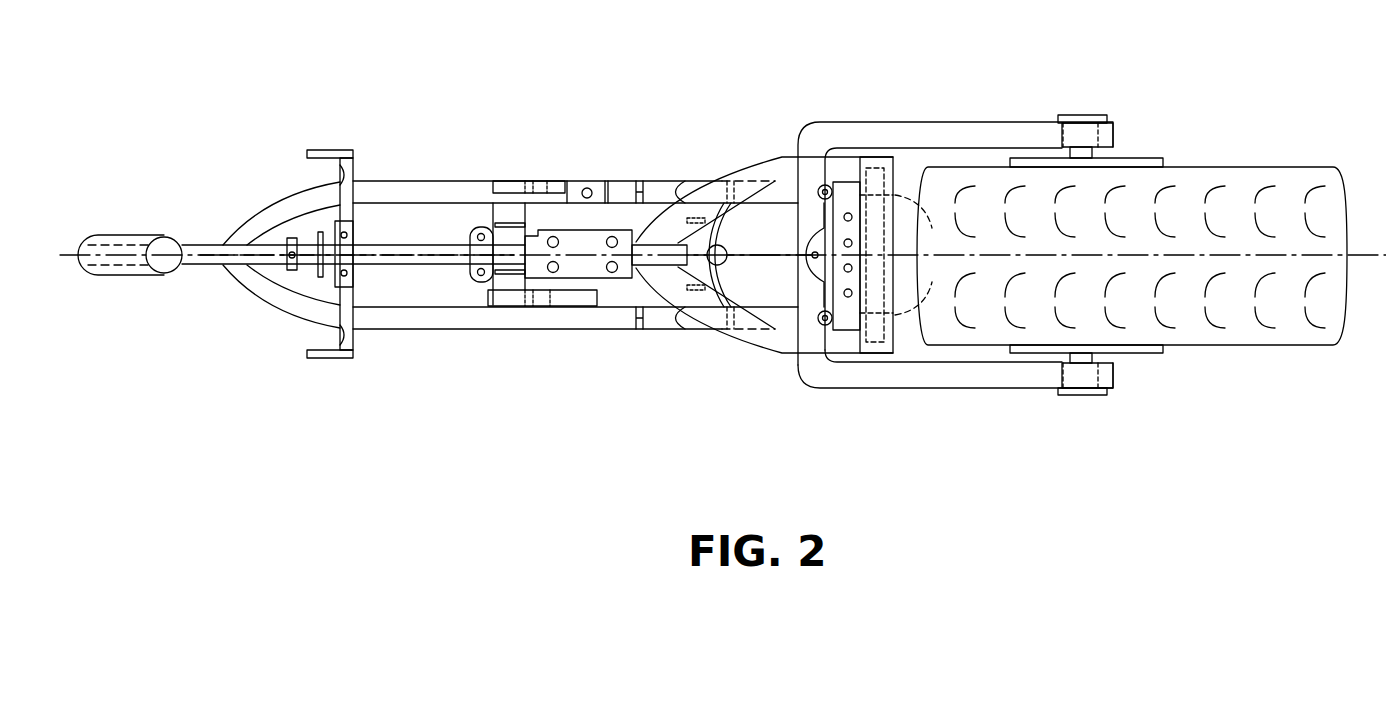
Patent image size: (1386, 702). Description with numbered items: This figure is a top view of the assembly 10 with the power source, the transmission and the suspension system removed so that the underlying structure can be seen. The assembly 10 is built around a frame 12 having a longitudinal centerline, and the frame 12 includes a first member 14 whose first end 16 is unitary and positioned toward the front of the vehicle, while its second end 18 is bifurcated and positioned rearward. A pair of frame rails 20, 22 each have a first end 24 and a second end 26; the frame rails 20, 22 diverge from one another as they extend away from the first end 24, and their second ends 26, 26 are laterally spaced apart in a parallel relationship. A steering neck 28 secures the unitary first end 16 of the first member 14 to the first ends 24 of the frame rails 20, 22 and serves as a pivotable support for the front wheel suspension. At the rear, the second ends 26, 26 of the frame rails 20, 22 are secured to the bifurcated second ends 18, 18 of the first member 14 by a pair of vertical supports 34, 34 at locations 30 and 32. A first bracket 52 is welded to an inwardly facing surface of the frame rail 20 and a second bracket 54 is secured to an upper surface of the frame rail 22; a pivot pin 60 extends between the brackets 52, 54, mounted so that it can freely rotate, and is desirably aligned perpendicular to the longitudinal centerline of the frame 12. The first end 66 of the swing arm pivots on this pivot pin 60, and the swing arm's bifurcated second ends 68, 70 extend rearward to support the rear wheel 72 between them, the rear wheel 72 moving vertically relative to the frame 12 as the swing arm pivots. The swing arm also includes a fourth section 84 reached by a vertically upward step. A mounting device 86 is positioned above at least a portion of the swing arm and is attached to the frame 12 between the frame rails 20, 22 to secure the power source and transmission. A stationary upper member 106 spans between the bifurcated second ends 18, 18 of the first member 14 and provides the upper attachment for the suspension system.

The assembly 10 is at (782, 84).
The frame 12 is at (634, 142).
The first member 14 is at (443, 178).
The first end 16 is at (193, 243).
The second end 18 is at (857, 180).
The frame rail 20 is at (465, 336).
The frame rail 22 is at (506, 178).
The first end 24 is at (255, 220).
The second end 26 is at (895, 190).
The steering neck 28 is at (125, 235).
The location 30 is at (890, 343).
The location 32 is at (890, 172).
The vertical support 34 is at (929, 255).
The first bracket 52 is at (555, 308).
The bracket 54 is at (545, 178).
The pivot pin 60 is at (535, 221).
The first end 66 is at (490, 284).
The second end 68 is at (1115, 373).
The second end 70 is at (1113, 133).
The rear wheel 72 is at (1308, 172).
The fourth section 84 is at (1013, 122).
The mounting device 86 is at (615, 285).
The stationary upper member 106 is at (843, 320).